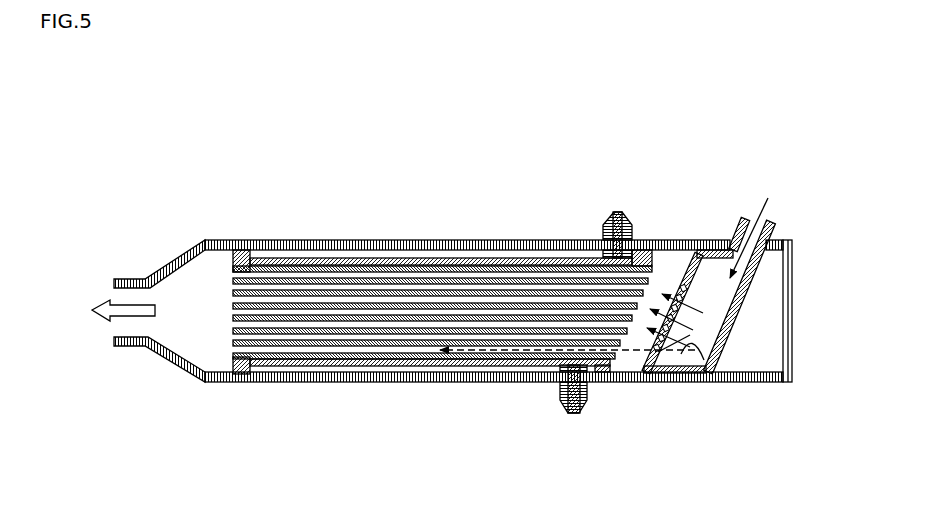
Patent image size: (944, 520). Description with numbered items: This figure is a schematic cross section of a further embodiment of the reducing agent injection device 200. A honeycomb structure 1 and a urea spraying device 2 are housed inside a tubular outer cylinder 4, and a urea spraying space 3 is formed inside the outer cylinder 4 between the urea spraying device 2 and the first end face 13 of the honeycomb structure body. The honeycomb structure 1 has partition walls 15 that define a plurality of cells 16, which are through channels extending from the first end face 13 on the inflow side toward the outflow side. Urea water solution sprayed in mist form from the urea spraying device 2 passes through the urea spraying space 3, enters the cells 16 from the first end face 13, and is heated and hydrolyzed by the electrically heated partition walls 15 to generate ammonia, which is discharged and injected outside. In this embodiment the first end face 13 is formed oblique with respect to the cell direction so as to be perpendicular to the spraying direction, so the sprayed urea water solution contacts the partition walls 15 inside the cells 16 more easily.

The reducing agent injection device 200 is at (876, 96).
The honeycomb structure 1 is at (408, 248).
The urea spraying device 2 is at (731, 340).
The urea spraying space 3 is at (676, 262).
The outer cylinder 4 is at (488, 238).
The first end face 13 is at (628, 337).
The partition walls 15 is at (333, 280).
The cells 16 is at (247, 313).